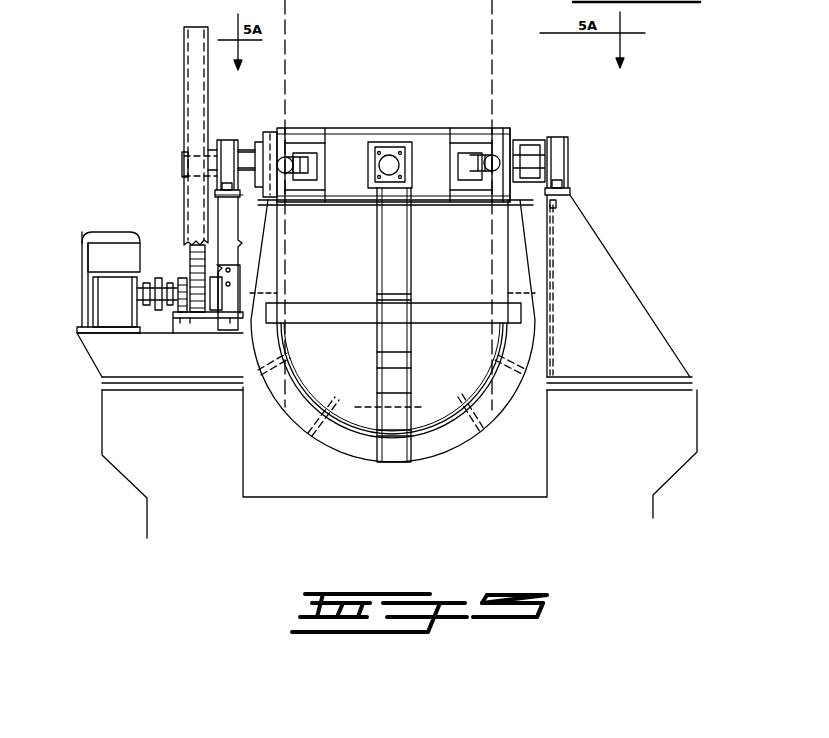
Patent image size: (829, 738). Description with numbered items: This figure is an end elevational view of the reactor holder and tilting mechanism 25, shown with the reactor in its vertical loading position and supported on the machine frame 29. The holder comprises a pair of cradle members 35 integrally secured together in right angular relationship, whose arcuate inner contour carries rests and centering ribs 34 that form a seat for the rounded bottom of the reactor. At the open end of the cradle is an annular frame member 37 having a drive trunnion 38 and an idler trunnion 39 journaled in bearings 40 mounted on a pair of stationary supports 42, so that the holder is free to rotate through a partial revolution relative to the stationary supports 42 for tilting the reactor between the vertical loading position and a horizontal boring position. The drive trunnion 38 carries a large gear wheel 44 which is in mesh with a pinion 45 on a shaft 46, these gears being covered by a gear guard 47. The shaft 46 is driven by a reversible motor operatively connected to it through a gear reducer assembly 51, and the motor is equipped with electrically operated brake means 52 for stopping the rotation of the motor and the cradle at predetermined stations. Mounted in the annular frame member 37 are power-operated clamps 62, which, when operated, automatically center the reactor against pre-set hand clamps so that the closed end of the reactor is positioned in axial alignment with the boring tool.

The reactor holder and tilting mechanism 25 is at (118, 99).
The machine frame 29 is at (122, 478).
The rests and centering ribs 34 is at (492, 342).
The cradle members 35 is at (378, 430).
The annular frame member 37 is at (476, 125).
The drive trunnion 38 is at (238, 148).
The idler trunnion 39 is at (545, 140).
The bearings 40 is at (226, 140).
The stationary supports 42 is at (225, 360).
The gear wheel 44 is at (193, 262).
The pinion 45 is at (196, 315).
The shaft 46 is at (180, 287).
The gear guard 47 is at (184, 70).
The gear reducer assembly 51 is at (95, 237).
The brake means 52 is at (93, 256).
The power-operated clamps 62 is at (300, 160).